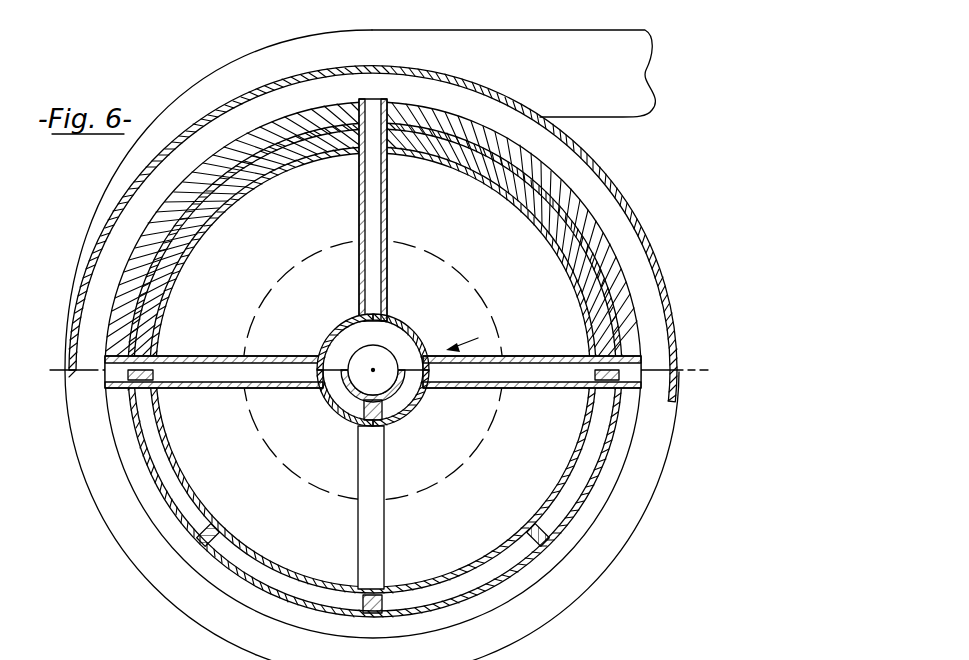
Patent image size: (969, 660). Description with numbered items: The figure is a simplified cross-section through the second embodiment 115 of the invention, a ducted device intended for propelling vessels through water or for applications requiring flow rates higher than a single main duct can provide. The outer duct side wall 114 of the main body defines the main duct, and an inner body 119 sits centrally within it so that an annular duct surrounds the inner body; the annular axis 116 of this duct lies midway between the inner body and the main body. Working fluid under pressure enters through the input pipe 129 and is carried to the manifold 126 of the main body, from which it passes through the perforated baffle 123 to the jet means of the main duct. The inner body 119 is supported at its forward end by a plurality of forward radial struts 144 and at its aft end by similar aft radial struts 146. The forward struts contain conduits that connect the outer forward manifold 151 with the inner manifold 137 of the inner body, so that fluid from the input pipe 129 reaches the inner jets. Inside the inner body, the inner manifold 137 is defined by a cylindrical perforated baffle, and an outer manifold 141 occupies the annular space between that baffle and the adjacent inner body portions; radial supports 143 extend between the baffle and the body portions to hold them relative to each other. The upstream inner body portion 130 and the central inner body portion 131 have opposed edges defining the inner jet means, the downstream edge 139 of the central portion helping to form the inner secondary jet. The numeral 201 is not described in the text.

The second embodiment 115 is at (128, 574).
The input pipe 129 is at (616, 47).
The outer forward manifold 151 is at (627, 240).
The band outer wall 201 is at (386, 515).
The duct side wall 114 is at (237, 206).
The perforated baffle 123 is at (595, 468).
The manifold 126 is at (586, 430).
The inner body 119 is at (497, 337).
The annular axis 116 is at (512, 405).
The forward radial struts 144 is at (390, 176).
The aft radial struts 146 is at (386, 540).
The upstream inner body portion 130 is at (334, 338).
The downstream edge of central inner portion 139 is at (400, 335).
The inner manifold 137 is at (398, 410).
The central inner body portion 131 is at (342, 412).
The radial supports 143 is at (332, 387).
The outer manifold 141 is at (334, 355).